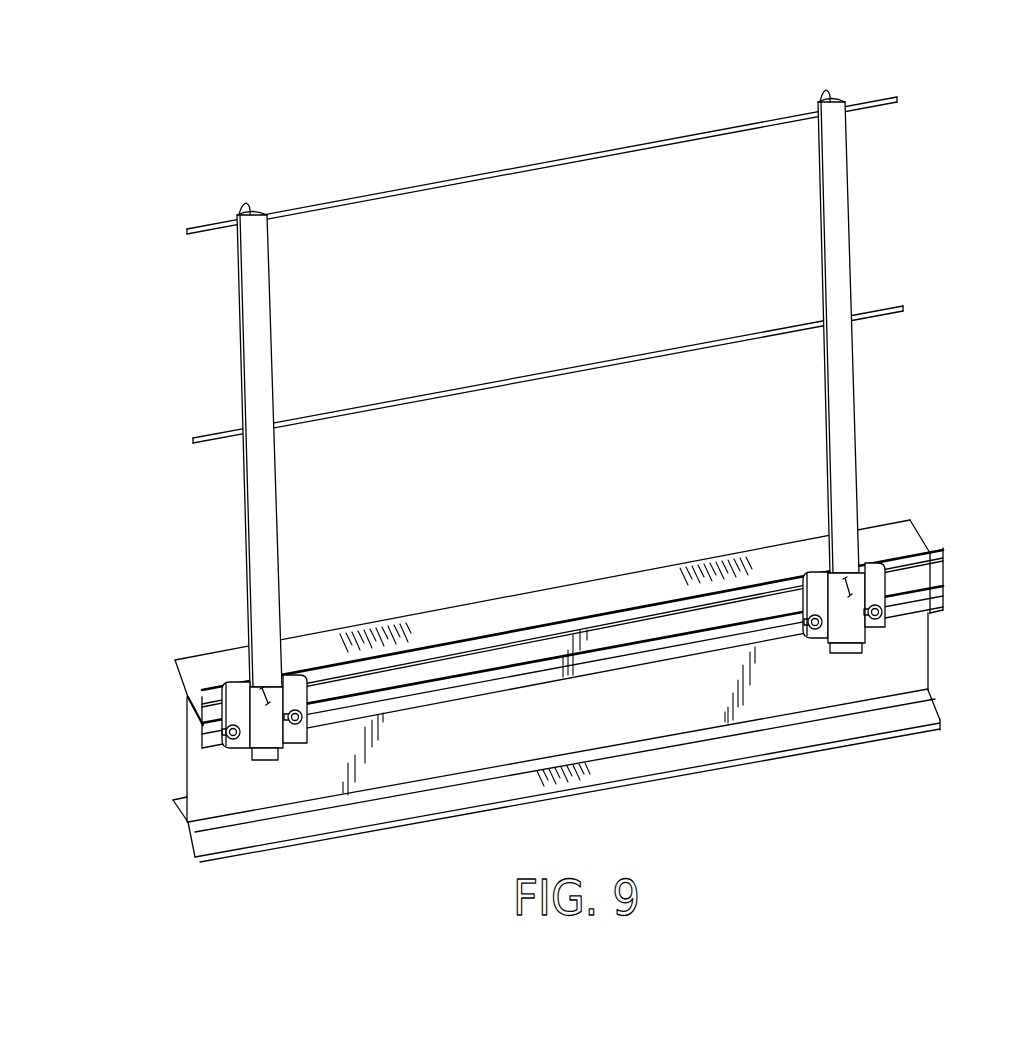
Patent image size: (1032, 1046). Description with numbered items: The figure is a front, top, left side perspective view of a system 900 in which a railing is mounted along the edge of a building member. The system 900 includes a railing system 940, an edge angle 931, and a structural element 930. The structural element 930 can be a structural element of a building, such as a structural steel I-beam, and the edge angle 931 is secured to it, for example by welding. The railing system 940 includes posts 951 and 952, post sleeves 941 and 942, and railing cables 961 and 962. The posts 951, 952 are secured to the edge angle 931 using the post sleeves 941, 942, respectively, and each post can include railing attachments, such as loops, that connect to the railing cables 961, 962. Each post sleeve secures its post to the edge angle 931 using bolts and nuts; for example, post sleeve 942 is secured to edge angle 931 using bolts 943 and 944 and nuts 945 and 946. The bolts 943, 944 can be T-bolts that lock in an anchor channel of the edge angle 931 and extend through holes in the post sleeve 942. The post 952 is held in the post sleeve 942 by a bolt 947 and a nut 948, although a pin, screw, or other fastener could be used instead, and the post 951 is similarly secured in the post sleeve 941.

The system 900 is at (585, 501).
The structural element 930 is at (303, 787).
The edge angle 931 is at (933, 577).
The railing system 940 is at (566, 448).
The post sleeve 941 is at (298, 685).
The post sleeve 942 is at (827, 627).
The bolt 943 is at (817, 630).
The bolt 944 is at (878, 628).
The nut 945 is at (787, 603).
The nut 946 is at (890, 615).
The bolt 947 is at (828, 583).
The nut 948 is at (847, 586).
The post 951 is at (258, 328).
The post 952 is at (838, 188).
The railing cable 961 is at (551, 385).
The railing cable 962 is at (527, 172).